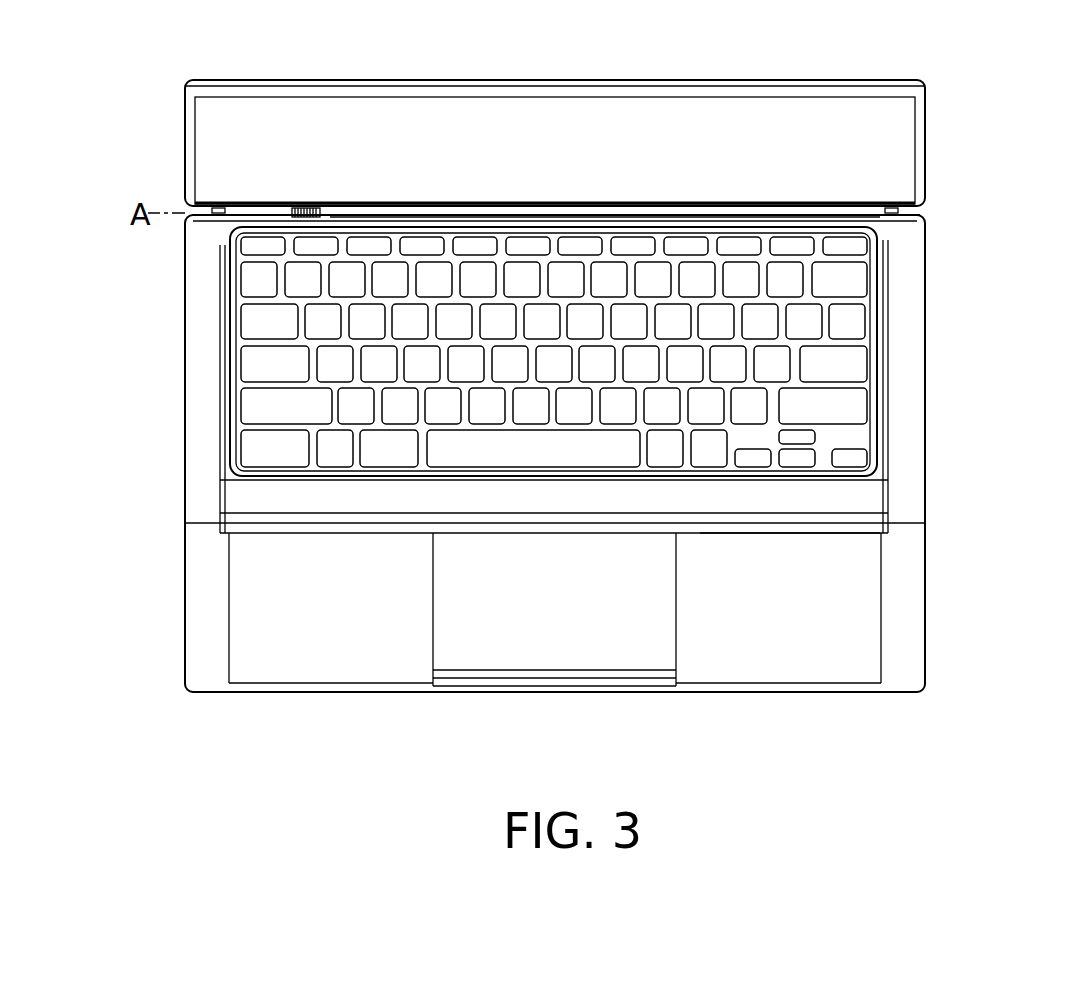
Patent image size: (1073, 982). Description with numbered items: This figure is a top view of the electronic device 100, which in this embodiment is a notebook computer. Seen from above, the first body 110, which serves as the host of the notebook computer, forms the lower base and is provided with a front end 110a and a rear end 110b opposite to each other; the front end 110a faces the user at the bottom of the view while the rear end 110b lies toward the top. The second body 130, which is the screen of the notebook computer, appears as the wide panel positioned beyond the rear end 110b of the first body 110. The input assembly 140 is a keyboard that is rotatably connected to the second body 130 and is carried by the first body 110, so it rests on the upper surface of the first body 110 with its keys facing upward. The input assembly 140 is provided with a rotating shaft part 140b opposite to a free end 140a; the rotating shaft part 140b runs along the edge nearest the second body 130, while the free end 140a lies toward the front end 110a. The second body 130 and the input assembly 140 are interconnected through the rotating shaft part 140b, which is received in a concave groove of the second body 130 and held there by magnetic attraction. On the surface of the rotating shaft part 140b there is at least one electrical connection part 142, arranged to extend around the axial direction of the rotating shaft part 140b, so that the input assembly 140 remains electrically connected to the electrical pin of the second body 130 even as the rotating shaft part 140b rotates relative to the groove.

The electronic device 100 is at (612, 401).
The first body 110 is at (902, 590).
The front end 110a is at (855, 699).
The rear end 110b is at (932, 216).
The second body 130 is at (915, 140).
The input assembly 140 is at (853, 437).
The free end 140a is at (797, 548).
The rotating shaft part 140b is at (571, 217).
The electrical connection part 142 is at (306, 208).